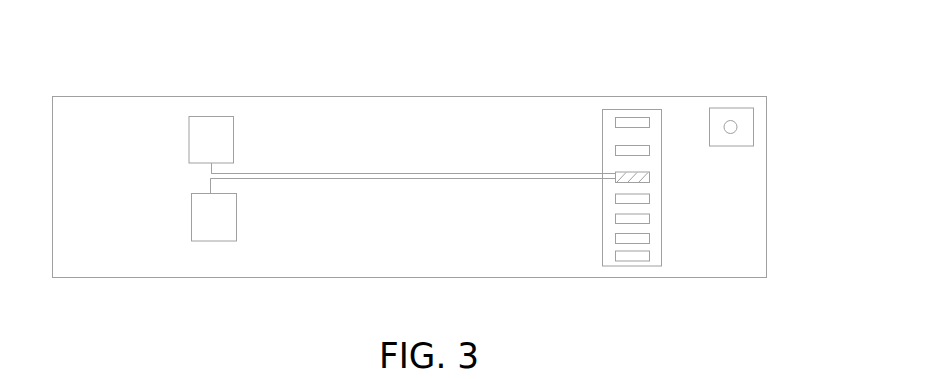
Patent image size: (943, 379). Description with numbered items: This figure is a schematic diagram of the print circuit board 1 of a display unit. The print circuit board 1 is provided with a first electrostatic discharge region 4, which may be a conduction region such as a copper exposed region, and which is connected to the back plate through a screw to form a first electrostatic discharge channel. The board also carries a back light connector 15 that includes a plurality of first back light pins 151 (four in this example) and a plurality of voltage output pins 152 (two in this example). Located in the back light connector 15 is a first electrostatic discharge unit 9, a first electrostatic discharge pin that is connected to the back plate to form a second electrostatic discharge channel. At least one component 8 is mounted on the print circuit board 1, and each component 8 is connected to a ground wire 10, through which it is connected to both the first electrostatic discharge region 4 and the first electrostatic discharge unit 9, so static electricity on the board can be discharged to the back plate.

The print circuit board 1 is at (354, 96).
The first electrostatic discharge region 4 is at (747, 130).
The component 8 is at (212, 116).
The first electrostatic discharge unit 9 is at (650, 176).
The ground wire 10 is at (469, 174).
The back light connector 15 is at (636, 110).
The first back light pin 151 is at (615, 255).
The voltage output pin 152 is at (615, 148).